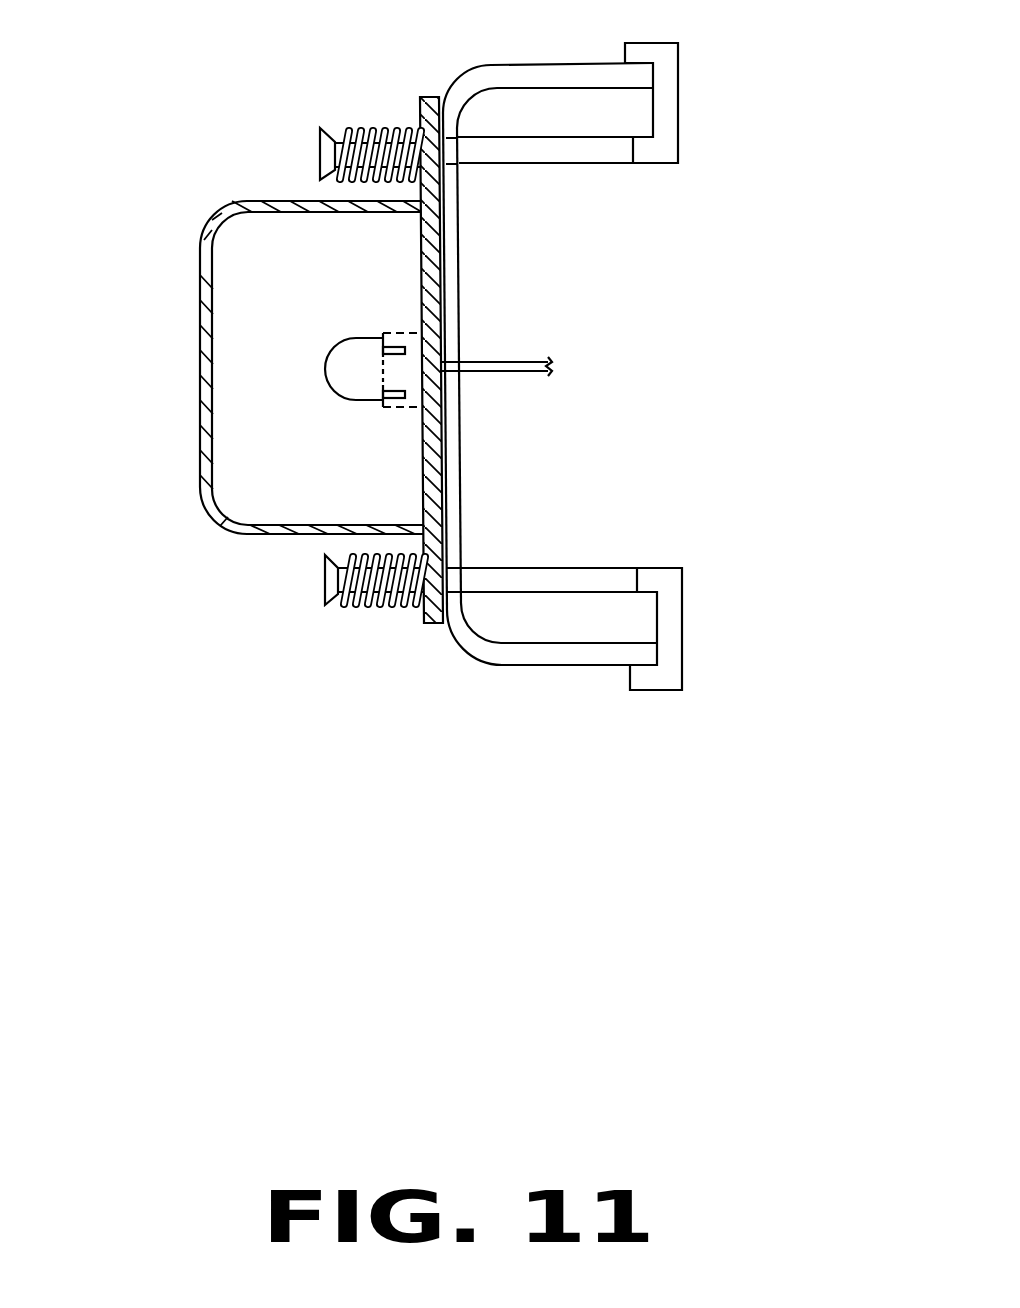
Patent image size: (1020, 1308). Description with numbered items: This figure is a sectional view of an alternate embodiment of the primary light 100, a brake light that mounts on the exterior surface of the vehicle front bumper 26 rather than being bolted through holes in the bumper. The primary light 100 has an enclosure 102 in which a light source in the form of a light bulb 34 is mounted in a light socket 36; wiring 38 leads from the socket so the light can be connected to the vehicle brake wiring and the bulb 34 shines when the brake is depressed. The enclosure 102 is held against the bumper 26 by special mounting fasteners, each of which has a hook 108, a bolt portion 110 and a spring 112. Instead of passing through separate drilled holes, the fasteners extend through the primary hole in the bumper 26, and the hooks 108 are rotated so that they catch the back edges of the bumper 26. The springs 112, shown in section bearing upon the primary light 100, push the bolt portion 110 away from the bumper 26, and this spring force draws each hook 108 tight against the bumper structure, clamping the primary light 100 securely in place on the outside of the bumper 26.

The vehicle front bumper 26 is at (458, 80).
The light bulb 34 is at (323, 377).
The light socket 36 is at (393, 407).
The wiring 38 is at (517, 372).
The primary light 100 is at (420, 192).
The enclosure 102 is at (202, 302).
The hook 108 is at (678, 63).
The bolt portion 110 is at (320, 157).
The spring 112 is at (397, 133).